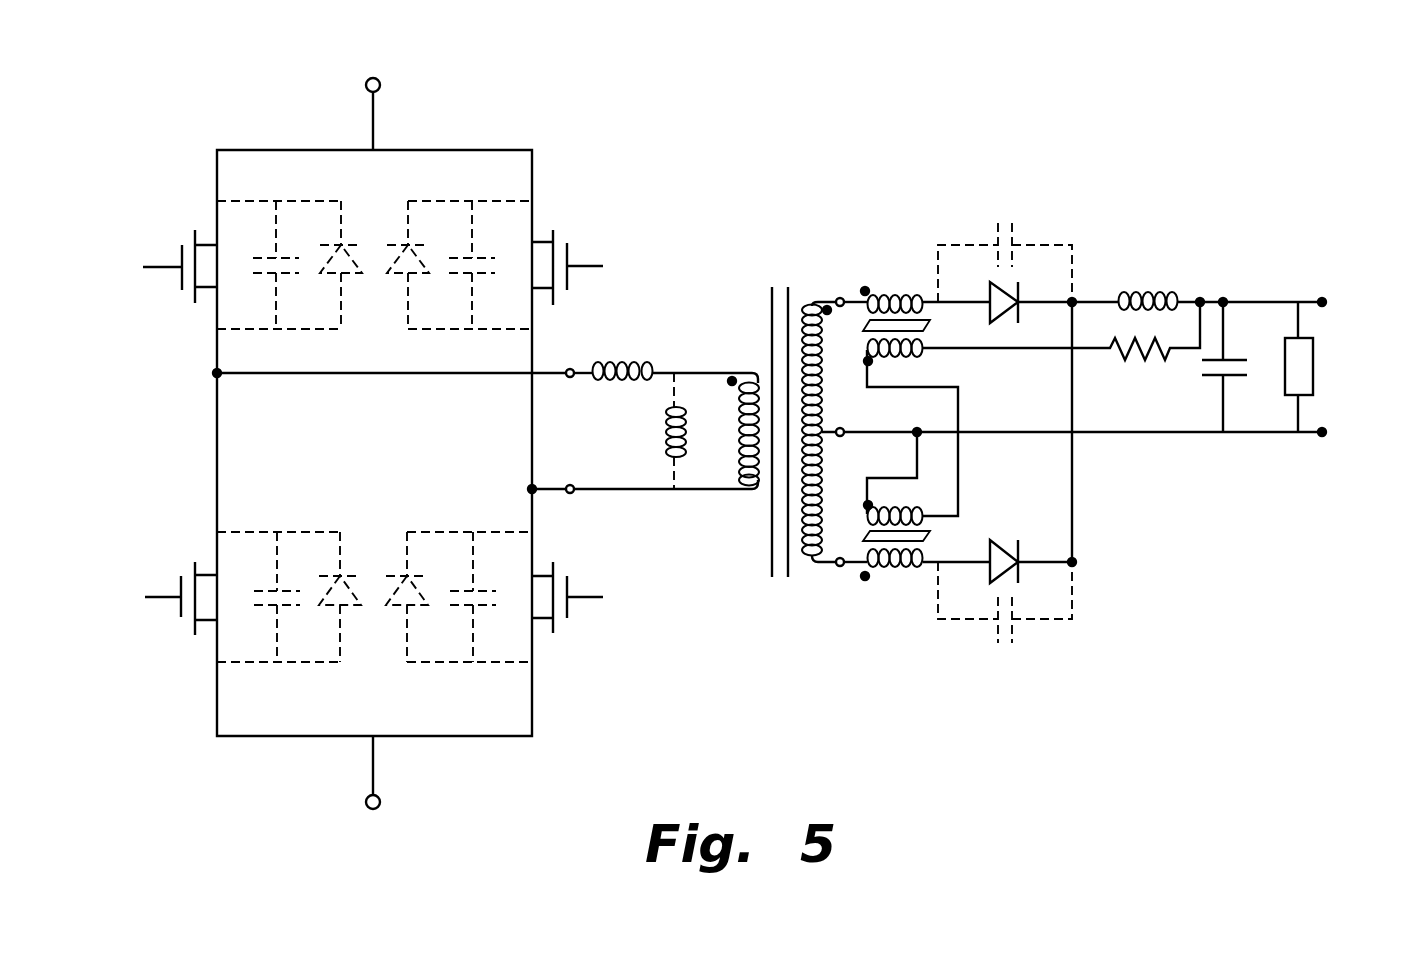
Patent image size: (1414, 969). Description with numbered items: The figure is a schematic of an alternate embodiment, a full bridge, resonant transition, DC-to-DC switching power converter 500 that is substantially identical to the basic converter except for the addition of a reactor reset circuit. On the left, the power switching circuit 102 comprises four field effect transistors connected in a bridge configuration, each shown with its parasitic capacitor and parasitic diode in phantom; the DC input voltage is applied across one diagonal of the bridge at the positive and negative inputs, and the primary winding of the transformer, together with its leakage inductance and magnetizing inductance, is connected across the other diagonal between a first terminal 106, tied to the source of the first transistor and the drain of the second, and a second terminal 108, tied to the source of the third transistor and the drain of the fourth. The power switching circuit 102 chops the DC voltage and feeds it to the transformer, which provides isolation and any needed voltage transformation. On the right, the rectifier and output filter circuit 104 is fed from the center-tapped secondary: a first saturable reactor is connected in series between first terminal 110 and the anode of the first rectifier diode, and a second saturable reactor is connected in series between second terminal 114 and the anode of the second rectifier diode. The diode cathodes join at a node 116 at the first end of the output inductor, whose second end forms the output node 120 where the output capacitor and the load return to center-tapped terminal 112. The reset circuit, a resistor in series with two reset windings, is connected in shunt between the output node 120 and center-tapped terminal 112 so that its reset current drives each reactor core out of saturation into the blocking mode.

The converter 500 is at (838, 73).
The power switching circuit 102 is at (558, 104).
The rectifier and output filter circuit 104 is at (1079, 177).
The first terminal 106 is at (571, 366).
The second terminal 108 is at (571, 482).
The first terminal 110 is at (841, 297).
The center-tapped terminal 112 is at (846, 429).
The second terminal 114 is at (841, 567).
The rectified output node 116 is at (1076, 298).
The output node 120 is at (1227, 298).